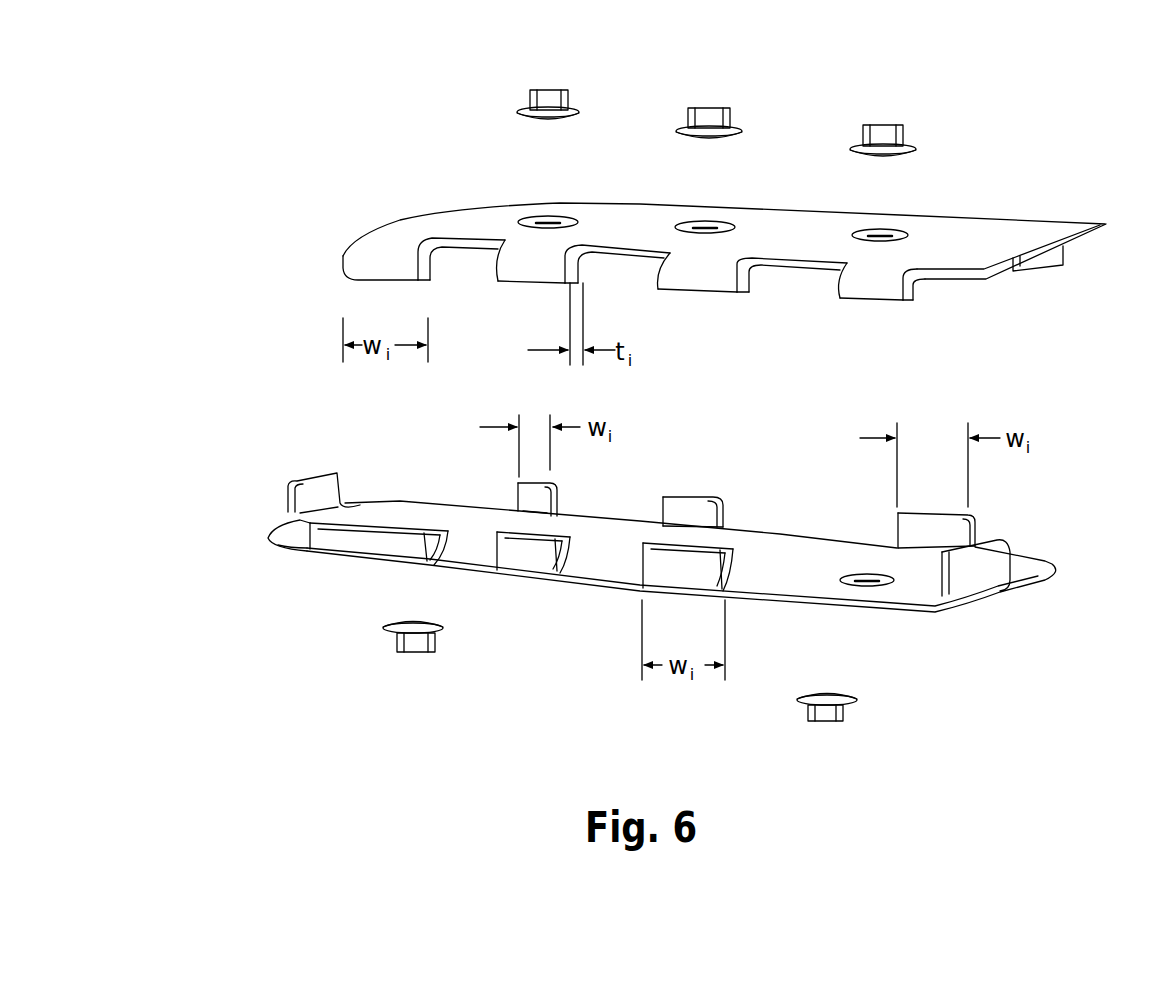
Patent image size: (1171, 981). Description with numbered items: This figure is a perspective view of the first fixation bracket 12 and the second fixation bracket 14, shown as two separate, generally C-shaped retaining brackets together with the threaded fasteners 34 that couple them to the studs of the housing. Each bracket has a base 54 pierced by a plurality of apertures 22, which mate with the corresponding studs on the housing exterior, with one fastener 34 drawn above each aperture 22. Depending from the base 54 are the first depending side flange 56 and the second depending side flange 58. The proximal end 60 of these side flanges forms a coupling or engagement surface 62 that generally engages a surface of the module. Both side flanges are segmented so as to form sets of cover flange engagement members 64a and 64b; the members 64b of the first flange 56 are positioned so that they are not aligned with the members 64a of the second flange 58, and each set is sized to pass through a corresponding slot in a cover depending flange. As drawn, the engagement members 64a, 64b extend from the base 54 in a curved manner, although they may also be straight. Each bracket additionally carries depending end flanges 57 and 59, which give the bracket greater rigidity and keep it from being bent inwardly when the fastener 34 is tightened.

The first fixation bracket 12 is at (950, 230).
The second fixation bracket 14 is at (800, 579).
The apertures 22 is at (568, 212).
The threaded fasteners 34 is at (568, 100).
The base 54 is at (1015, 236).
The first depending side flange 56 is at (1058, 264).
The end flange 57 is at (978, 574).
The second depending side flange 58 is at (882, 291).
The end flange 59 is at (290, 511).
The proximal end 60 is at (368, 283).
The engagement surface 62 is at (381, 285).
The cover flange engagement members 64a is at (365, 250).
The cover flange engagement members 64b is at (1030, 271).